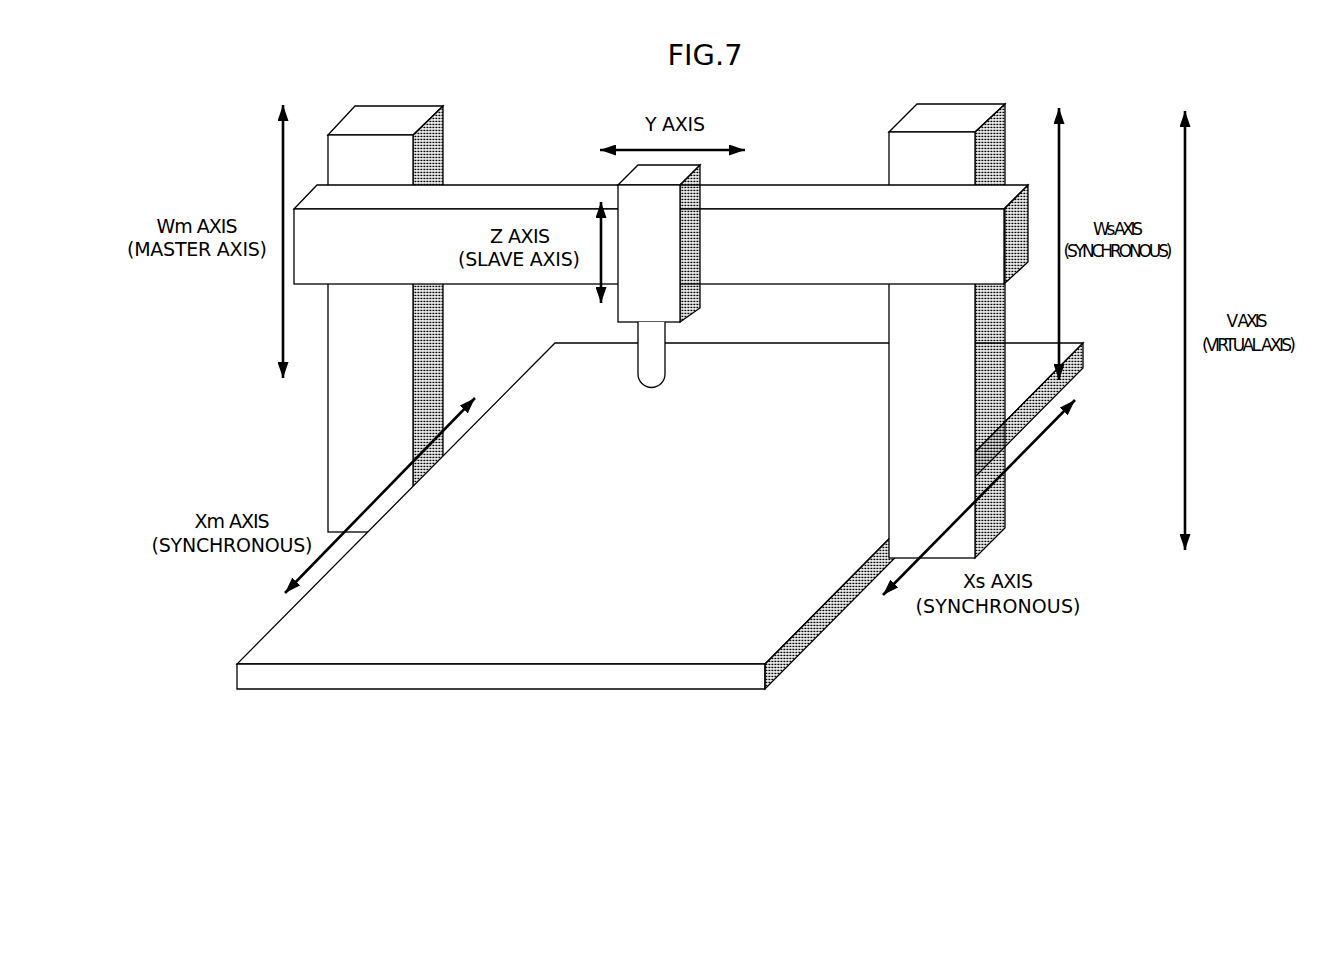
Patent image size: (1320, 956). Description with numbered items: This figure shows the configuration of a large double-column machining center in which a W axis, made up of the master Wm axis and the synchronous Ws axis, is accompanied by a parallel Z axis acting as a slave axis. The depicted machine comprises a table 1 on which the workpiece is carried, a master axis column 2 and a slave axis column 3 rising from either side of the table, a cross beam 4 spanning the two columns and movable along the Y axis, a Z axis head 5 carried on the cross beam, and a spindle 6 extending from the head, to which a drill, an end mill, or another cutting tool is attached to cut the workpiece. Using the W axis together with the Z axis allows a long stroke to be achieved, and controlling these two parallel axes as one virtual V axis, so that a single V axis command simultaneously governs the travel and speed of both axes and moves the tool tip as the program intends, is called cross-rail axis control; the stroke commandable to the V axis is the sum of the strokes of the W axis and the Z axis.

The table 1 is at (660, 516).
The master axis column (Wm axis) 2 is at (385, 319).
The slave axis column (Ws axis) 3 is at (947, 331).
The cross beam (Y axis) 4 is at (661, 234).
The Z axis head 5 is at (659, 243).
The spindle 6 is at (651, 355).